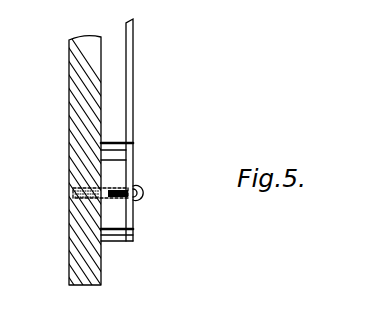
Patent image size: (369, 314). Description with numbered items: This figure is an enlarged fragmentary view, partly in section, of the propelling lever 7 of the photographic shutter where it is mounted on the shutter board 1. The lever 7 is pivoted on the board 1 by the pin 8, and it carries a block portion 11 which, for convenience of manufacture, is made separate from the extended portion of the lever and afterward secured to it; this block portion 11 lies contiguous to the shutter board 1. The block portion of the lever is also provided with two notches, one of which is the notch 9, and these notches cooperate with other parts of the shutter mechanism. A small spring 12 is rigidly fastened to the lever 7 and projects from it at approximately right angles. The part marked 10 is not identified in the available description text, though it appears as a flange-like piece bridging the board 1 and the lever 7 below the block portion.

The shutter board 1 is at (69, 128).
The propelling lever 7 is at (134, 119).
The pin 8 is at (147, 196).
The notch 9 is at (134, 148).
The lower bracket flange 10 is at (120, 242).
The block portion 11 is at (115, 175).
The small spring 12 is at (118, 199).